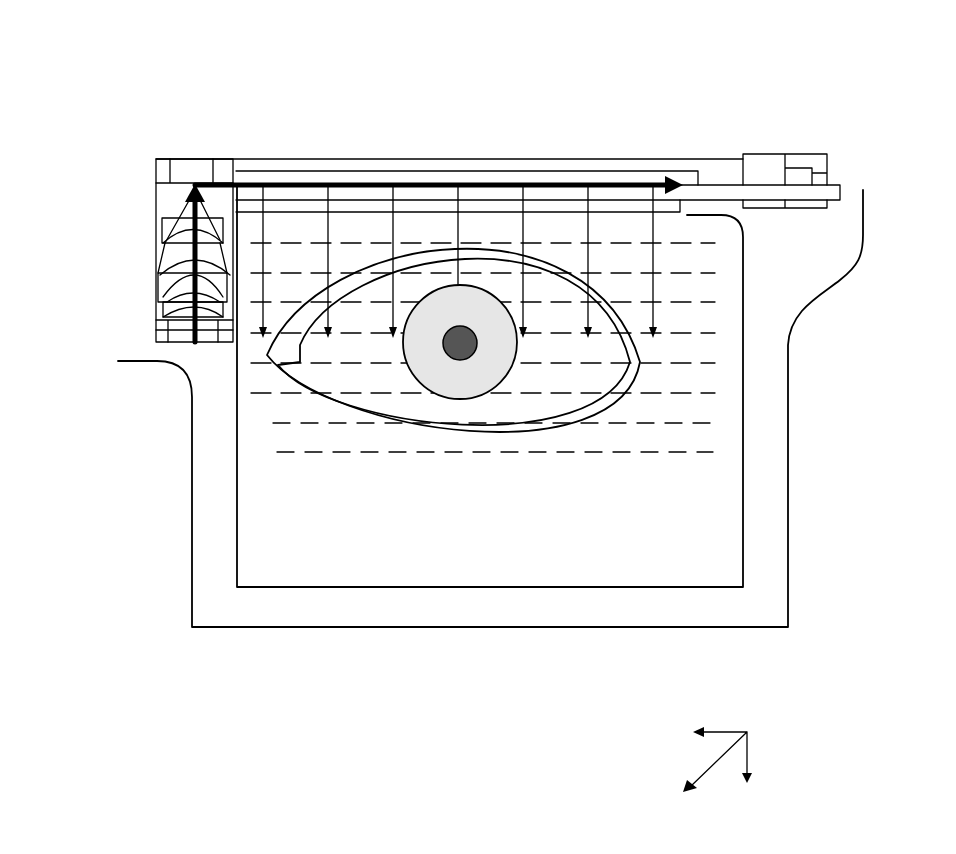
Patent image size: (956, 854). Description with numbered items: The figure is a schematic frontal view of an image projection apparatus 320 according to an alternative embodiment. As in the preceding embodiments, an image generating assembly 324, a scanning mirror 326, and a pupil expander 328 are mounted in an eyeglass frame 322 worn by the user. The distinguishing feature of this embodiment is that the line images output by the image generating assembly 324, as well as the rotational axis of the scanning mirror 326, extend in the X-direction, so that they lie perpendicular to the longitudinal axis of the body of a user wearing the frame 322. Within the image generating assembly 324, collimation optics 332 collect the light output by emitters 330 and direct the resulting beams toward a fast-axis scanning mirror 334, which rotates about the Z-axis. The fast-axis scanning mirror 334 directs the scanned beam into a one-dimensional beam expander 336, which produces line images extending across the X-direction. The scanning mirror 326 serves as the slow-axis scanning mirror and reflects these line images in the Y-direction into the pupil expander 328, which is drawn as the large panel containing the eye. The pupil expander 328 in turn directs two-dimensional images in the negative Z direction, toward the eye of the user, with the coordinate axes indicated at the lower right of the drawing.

The image projection apparatus 320 is at (104, 35).
The eyeglass frame 322 is at (767, 356).
The image generating assembly 324 is at (95, 152).
The scanning mirror 326 is at (617, 163).
The pupil expander 328 is at (557, 564).
The emitters 330 is at (203, 342).
The collimation optics 332 is at (158, 213).
The fast-axis scanning mirror 334 is at (180, 159).
The 1D beam expander 336 is at (422, 180).